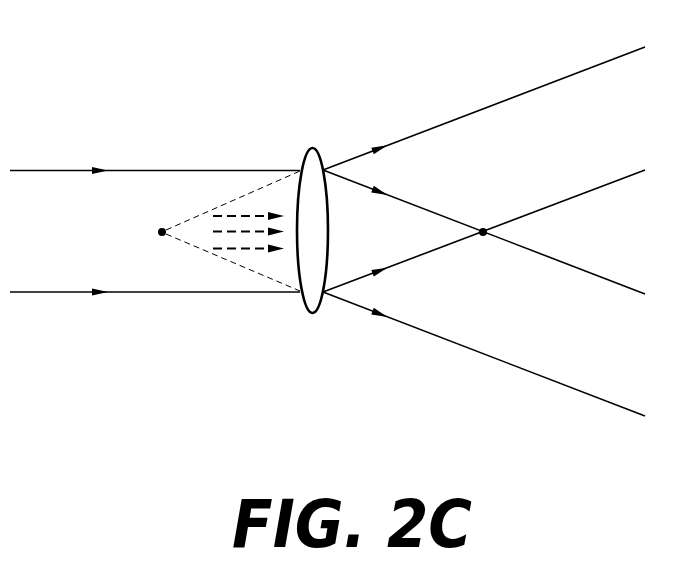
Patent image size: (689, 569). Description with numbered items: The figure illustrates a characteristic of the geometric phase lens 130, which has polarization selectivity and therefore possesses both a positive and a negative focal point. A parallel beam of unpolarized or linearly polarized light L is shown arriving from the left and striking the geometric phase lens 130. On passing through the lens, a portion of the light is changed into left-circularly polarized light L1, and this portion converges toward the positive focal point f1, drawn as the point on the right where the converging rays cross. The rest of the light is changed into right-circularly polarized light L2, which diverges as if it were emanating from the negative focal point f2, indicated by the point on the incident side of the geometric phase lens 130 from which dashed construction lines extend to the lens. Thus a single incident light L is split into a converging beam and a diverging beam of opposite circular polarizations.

The geometric phase lens 130 is at (312, 150).
The unpolarized or linearly polarized light L is at (42, 170).
The light of left-circular polarization L1 is at (553, 205).
The light of right-circular polarization L2 is at (470, 114).
The positive focal point f1 is at (484, 216).
The negative focal point f2 is at (215, 231).